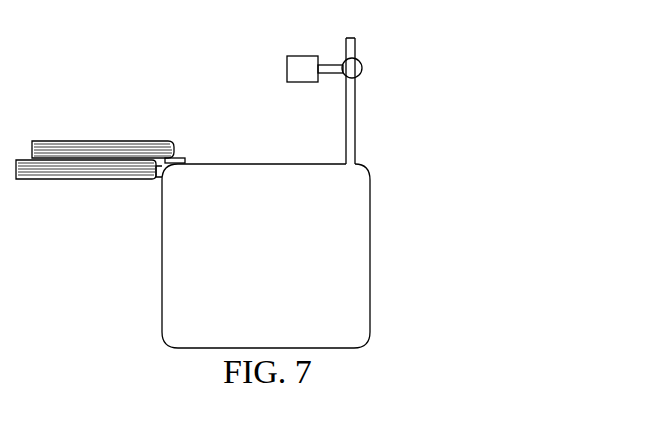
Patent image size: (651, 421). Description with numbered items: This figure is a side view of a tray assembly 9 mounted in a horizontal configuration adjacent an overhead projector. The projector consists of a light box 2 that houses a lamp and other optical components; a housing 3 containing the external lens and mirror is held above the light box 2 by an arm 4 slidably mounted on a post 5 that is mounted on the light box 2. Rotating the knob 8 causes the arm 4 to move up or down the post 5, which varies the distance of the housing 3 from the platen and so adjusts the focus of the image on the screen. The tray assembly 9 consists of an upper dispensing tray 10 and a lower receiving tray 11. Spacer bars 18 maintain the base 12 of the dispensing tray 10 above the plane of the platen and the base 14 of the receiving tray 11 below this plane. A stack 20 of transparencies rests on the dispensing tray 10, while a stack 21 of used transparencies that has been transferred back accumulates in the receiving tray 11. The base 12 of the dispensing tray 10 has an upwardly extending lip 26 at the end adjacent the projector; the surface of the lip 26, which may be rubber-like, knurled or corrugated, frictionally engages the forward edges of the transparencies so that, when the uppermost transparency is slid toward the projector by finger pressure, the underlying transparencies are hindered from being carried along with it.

The light box 2 is at (277, 289).
The housing 3 is at (298, 70).
The arm 4 is at (331, 68).
The post 5 is at (346, 126).
The knob 8 is at (353, 68).
The tray assembly 9 is at (113, 80).
The dispensing tray 10 is at (105, 139).
The receiving tray 11 is at (22, 155).
The base of dispensing tray 12 is at (98, 160).
The base of receiving tray 14 is at (40, 181).
The spacer bars 18 is at (163, 172).
The stack of transparencies 20 is at (167, 154).
The stack of transparencies 21 is at (133, 181).
The lip 26 is at (185, 160).